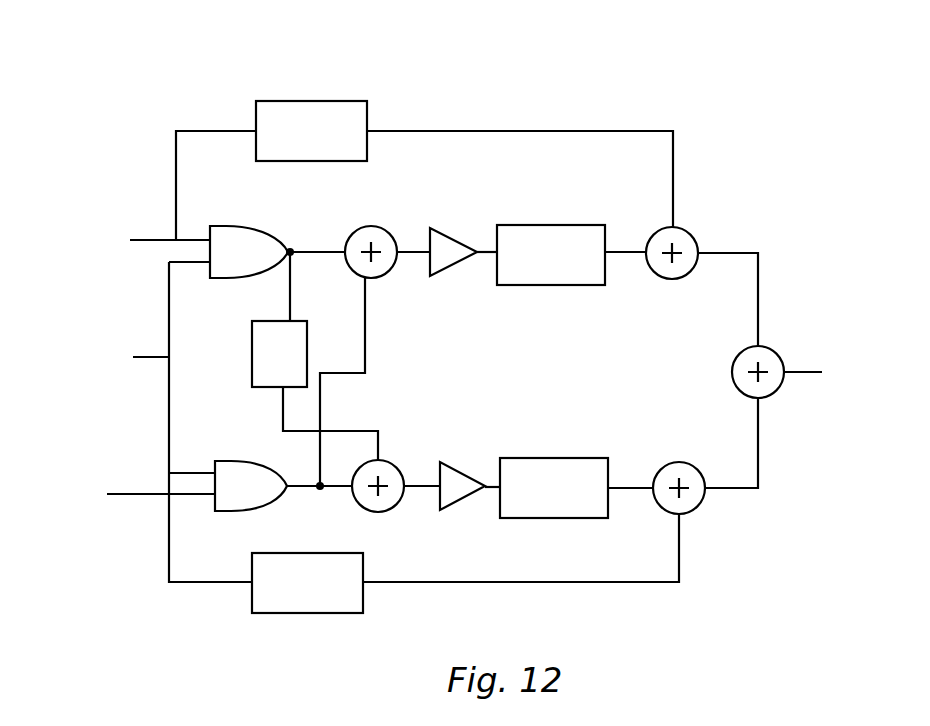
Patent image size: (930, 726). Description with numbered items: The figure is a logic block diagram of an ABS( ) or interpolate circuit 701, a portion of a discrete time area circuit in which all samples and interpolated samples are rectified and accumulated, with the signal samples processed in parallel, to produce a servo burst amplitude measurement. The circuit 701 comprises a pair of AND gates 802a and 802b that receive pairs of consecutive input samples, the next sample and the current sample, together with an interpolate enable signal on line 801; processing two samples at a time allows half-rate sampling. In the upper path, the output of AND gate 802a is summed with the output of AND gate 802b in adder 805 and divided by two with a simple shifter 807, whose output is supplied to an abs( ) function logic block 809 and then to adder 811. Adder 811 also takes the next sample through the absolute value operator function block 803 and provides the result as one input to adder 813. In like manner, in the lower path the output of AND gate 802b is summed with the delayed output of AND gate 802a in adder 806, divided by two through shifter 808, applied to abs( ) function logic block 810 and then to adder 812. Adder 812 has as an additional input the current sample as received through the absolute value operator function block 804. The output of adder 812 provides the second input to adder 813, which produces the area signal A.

The ABS( ) or interpolate circuit 701 is at (632, 100).
The line 801 is at (172, 336).
The AND gate 802a is at (246, 229).
The AND gate 802b is at (218, 513).
The absolute value operator function block 803 is at (311, 101).
The absolute value operator function block 804 is at (272, 554).
The adder 805 is at (373, 226).
The adder 806 is at (382, 461).
The shifter 807 is at (434, 277).
The shifter 808 is at (444, 511).
The abs( ) function logic block 809 is at (543, 226).
The abs( ) function logic block 810 is at (548, 458).
The adder 811 is at (691, 237).
The adder 812 is at (685, 467).
The adder 813 is at (774, 351).